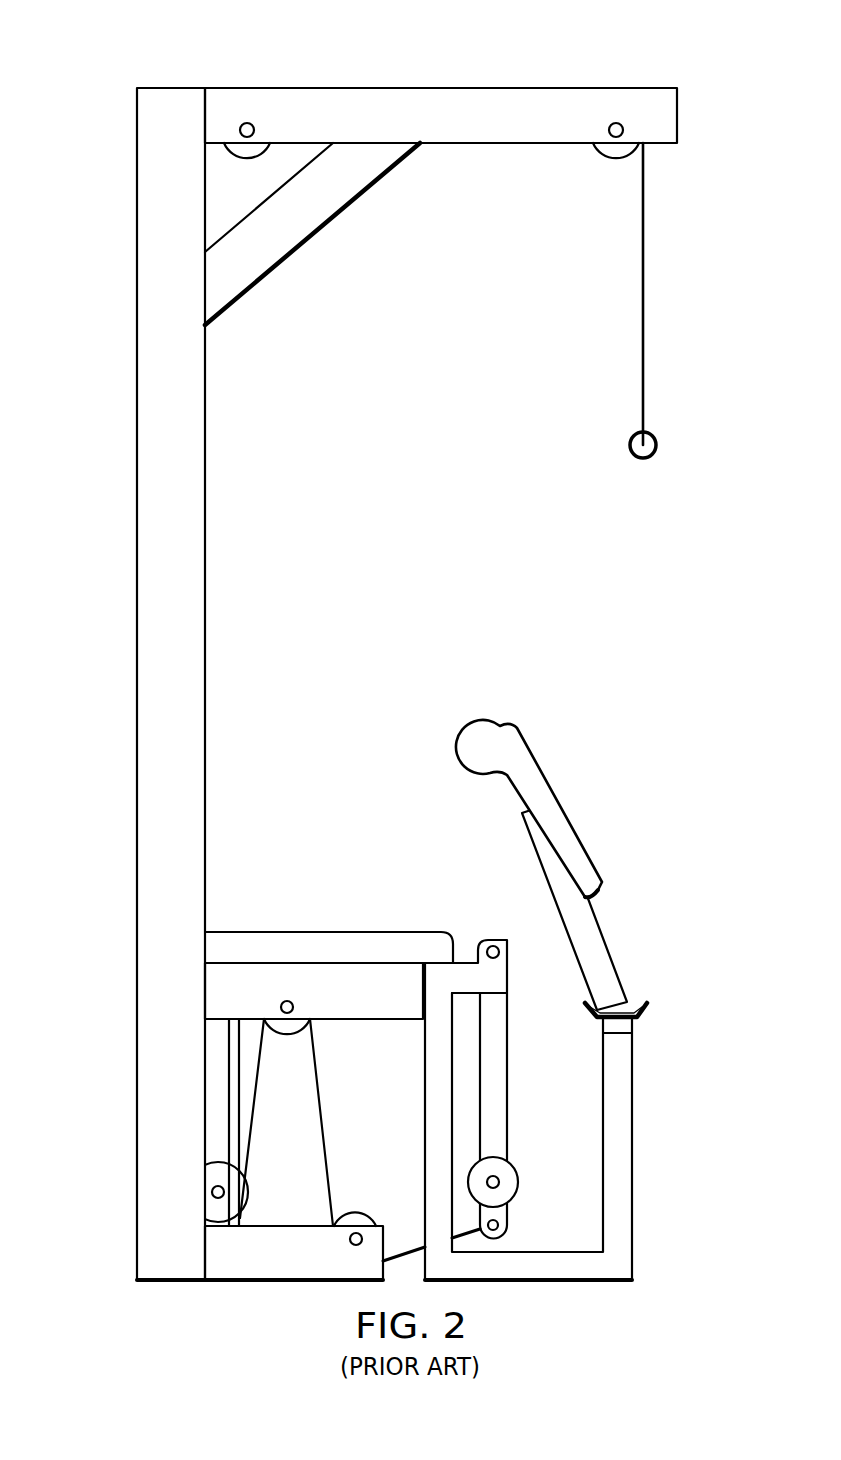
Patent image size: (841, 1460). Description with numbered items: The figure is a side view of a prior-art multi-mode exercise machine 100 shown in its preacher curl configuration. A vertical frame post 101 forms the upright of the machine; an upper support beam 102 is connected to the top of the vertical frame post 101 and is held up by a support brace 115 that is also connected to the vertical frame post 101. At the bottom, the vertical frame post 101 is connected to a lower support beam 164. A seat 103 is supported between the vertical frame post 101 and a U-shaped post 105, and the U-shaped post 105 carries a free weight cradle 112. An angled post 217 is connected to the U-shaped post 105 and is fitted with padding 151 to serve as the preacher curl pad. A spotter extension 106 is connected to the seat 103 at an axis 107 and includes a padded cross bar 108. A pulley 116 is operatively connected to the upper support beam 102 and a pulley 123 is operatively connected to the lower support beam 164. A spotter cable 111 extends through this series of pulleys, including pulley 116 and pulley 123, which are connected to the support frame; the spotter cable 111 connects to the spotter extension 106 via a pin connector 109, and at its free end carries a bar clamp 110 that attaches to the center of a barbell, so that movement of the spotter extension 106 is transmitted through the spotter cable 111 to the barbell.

The exercise machine 100 is at (90, 66).
The vertical frame post 101 is at (137, 337).
The upper support beam 102 is at (277, 88).
The seat 103 is at (362, 1022).
The U-shaped post 105 is at (632, 1150).
The spotter extension 106 is at (510, 1078).
The axis 107 is at (497, 945).
The padded cross bar 108 is at (518, 1184).
The pin connector 109 is at (498, 1224).
The bar clamp 110 is at (657, 448).
The spotter cable 111 is at (645, 293).
The free weight cradle 112 is at (640, 1006).
The support brace 115 is at (313, 237).
The pulley 116 is at (607, 158).
The pulley 123 is at (358, 1212).
The padding 151 is at (492, 718).
The lower support beam 164 is at (258, 1282).
The angled post 217 is at (600, 932).